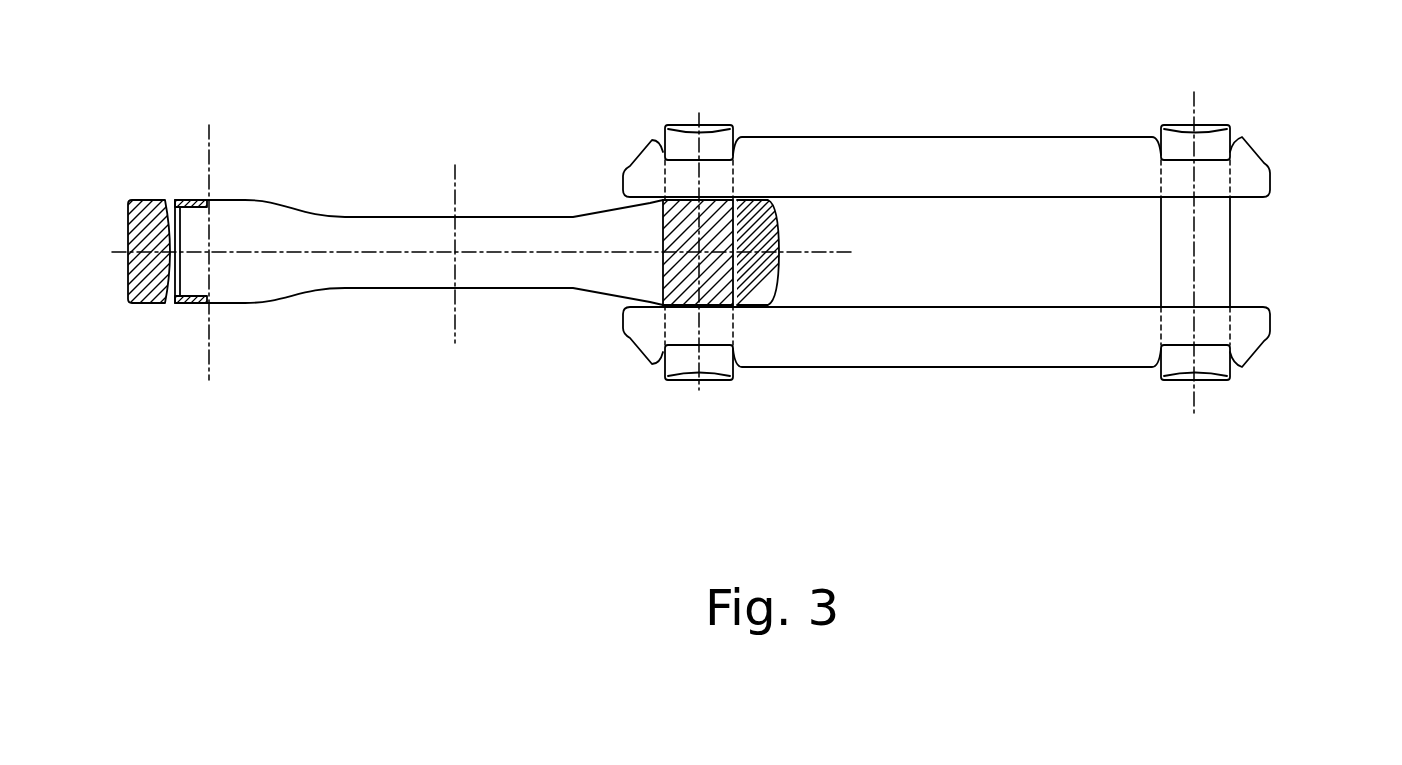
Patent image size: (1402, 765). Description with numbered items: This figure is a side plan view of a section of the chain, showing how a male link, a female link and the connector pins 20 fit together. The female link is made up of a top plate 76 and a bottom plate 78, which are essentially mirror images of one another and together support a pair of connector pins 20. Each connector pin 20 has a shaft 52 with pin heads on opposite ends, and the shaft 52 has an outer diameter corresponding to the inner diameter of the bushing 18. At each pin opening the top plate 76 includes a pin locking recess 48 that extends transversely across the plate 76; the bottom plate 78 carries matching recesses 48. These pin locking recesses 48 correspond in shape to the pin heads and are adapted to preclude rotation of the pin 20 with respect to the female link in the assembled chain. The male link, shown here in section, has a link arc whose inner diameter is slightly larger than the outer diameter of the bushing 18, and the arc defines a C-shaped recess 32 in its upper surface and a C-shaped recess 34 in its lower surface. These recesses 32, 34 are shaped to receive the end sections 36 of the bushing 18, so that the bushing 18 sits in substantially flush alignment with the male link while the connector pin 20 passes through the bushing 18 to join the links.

The bushing 18 is at (192, 307).
The connector pin 20 is at (1240, 257).
The upper surface recess 32 is at (152, 200).
The lower surface recess 34 is at (130, 302).
The end section of bushing 36 is at (187, 198).
The pin locking recess 48 is at (737, 130).
The shaft 52 is at (1220, 280).
The top plate 76 is at (998, 157).
The bottom plate 78 is at (930, 350).